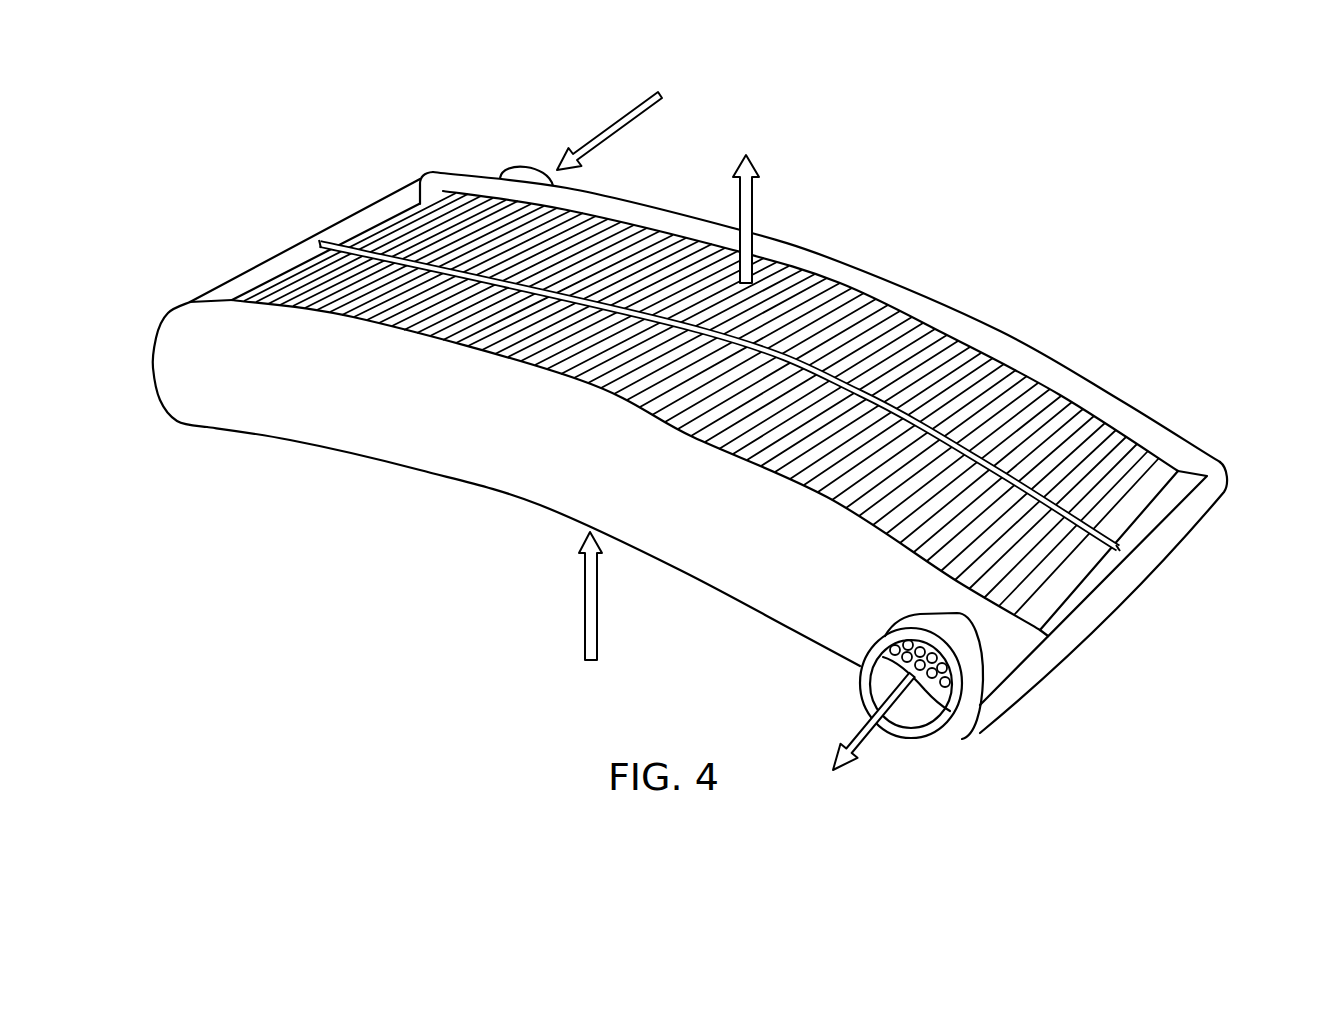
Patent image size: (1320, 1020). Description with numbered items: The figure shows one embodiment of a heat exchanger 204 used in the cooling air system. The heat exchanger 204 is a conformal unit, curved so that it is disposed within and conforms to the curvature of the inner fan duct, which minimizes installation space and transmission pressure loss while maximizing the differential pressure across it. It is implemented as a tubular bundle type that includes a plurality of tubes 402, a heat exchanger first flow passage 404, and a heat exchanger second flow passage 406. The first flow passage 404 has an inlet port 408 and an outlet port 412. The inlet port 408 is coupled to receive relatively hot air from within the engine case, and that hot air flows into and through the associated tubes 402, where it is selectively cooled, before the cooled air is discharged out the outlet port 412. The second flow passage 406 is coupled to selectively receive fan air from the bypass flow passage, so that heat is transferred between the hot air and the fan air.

The heat exchanger 204 is at (1083, 282).
The tubes 402 is at (1166, 471).
The heat exchanger first flow passage 404 is at (614, 123).
The heat exchanger second flow passage 406 is at (753, 211).
The inlet port 408 is at (504, 176).
The outlet port 412 is at (930, 690).